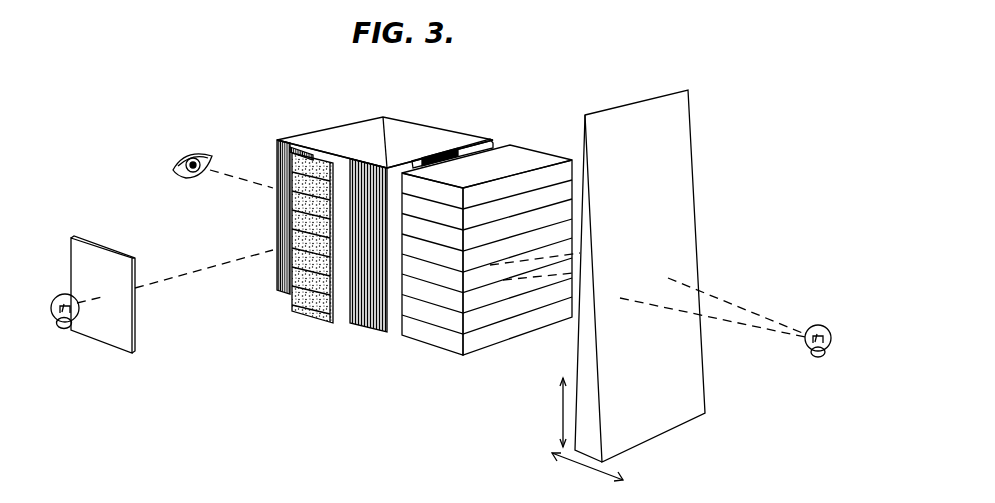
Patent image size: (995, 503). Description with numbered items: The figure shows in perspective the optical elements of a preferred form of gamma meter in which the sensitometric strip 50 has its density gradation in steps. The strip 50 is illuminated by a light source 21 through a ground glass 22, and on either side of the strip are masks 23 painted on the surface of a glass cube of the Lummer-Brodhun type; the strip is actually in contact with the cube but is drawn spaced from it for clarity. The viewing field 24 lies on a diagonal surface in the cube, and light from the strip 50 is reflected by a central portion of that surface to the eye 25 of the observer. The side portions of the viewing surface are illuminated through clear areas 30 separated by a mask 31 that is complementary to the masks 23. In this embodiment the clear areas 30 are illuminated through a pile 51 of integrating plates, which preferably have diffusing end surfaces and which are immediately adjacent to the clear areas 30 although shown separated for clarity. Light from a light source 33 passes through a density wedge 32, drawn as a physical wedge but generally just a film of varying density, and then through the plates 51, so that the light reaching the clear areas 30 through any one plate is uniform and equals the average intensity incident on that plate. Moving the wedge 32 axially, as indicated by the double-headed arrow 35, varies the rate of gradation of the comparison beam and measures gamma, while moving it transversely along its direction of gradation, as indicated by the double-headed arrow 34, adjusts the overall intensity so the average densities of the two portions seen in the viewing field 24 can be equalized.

The light source 21 is at (62, 296).
The ground glass 22 is at (98, 257).
The masks 23 is at (352, 160).
The viewing field 24 is at (390, 128).
The eye 25 is at (197, 151).
The clear areas 30 is at (412, 166).
The mask 31 is at (442, 152).
The density wedge 32 is at (678, 145).
The light source 33 is at (820, 326).
The double-headed arrow 34 is at (560, 405).
The double-headed arrow 35 is at (555, 458).
The sensitometric strip 50 is at (307, 310).
The pile of integrating plates 51 is at (447, 340).